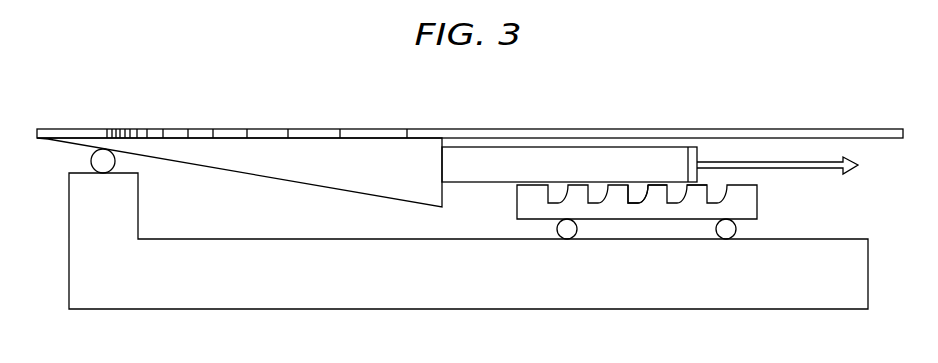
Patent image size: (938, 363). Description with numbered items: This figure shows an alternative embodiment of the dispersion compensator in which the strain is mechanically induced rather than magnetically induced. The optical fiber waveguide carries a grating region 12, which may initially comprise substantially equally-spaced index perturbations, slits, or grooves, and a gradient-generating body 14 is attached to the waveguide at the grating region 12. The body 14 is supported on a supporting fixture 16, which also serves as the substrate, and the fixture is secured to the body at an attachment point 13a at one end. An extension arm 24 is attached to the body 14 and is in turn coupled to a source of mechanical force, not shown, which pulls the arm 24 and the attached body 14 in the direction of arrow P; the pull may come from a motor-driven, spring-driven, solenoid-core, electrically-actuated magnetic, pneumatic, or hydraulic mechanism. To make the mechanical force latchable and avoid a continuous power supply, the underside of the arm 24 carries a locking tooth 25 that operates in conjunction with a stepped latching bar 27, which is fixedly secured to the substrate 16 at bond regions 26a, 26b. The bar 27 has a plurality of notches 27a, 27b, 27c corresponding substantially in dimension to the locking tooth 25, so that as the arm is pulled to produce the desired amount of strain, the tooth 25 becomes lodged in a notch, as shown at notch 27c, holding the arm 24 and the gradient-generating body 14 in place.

The grating region 12 is at (139, 128).
The attachment point 13a is at (89, 160).
The gradient-generating body 14 is at (362, 140).
The supporting fixture 16 is at (193, 298).
The extension arm 24 is at (527, 153).
The locking tooth 25 is at (637, 205).
The bond region 26a is at (556, 236).
The bond region 26b is at (733, 238).
The stepped latching bar 27 is at (683, 221).
The notch 27a is at (717, 192).
The notch 27b is at (675, 192).
The notch 27c is at (640, 207).